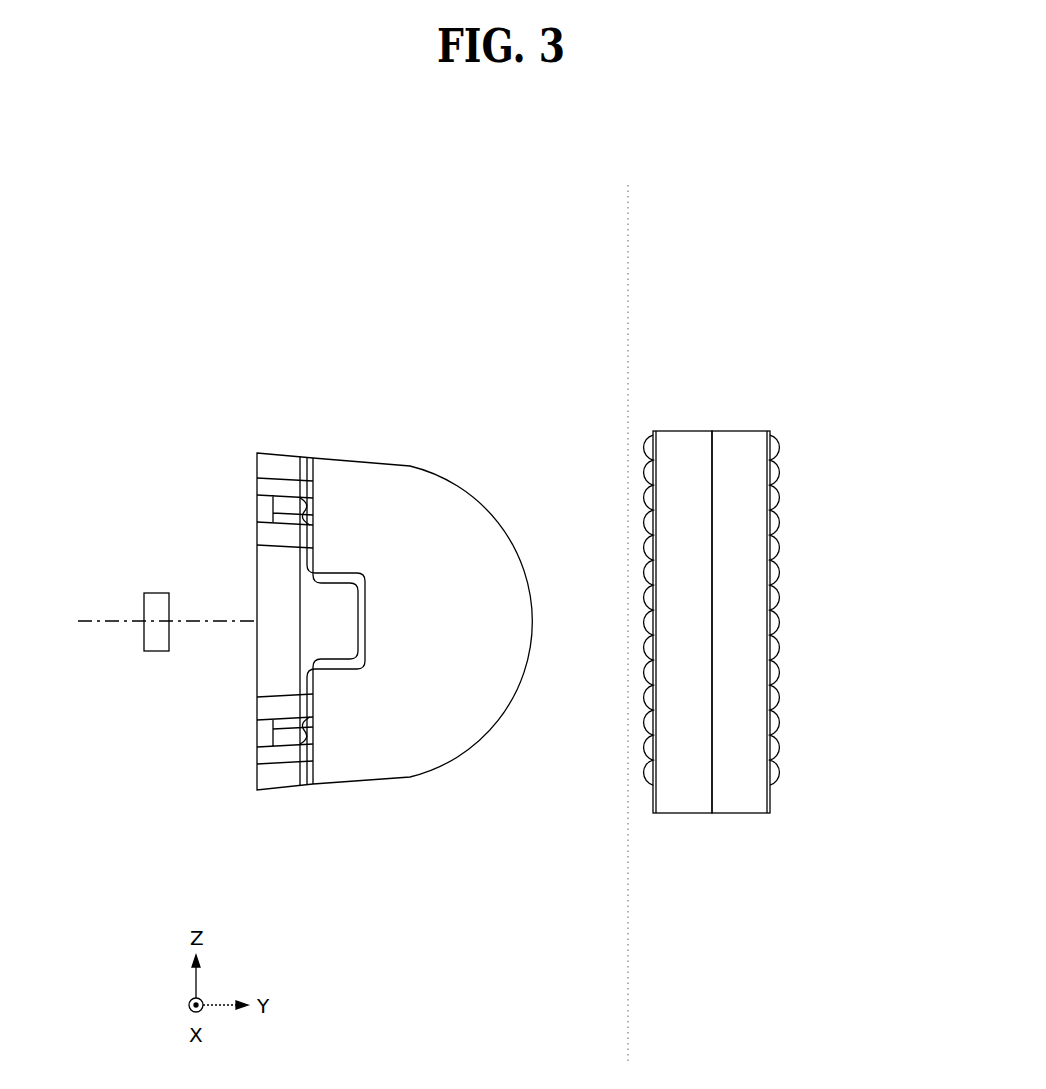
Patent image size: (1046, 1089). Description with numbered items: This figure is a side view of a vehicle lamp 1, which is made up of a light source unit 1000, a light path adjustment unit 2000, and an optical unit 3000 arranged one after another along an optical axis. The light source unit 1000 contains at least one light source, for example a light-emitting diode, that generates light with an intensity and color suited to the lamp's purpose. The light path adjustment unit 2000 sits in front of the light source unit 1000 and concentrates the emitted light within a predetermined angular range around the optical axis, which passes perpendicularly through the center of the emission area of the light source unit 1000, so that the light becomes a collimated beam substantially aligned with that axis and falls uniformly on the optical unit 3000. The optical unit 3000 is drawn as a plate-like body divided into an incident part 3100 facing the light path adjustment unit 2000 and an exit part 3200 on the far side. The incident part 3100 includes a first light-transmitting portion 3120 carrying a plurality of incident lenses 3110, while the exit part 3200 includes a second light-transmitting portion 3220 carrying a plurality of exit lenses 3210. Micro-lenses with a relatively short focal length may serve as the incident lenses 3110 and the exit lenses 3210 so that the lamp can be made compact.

The vehicle lamp 1 is at (565, 224).
The light source unit 1000 is at (157, 592).
The light path adjustment unit 2000 is at (345, 817).
The optical unit 3000 is at (712, 832).
The incident part 3100 is at (545, 450).
The incident lenses 3110 is at (648, 498).
The first light-transmitting portion 3120 is at (683, 437).
The exit part 3200 is at (878, 450).
The exit lenses 3210 is at (775, 498).
The second light-transmitting portion 3220 is at (741, 437).